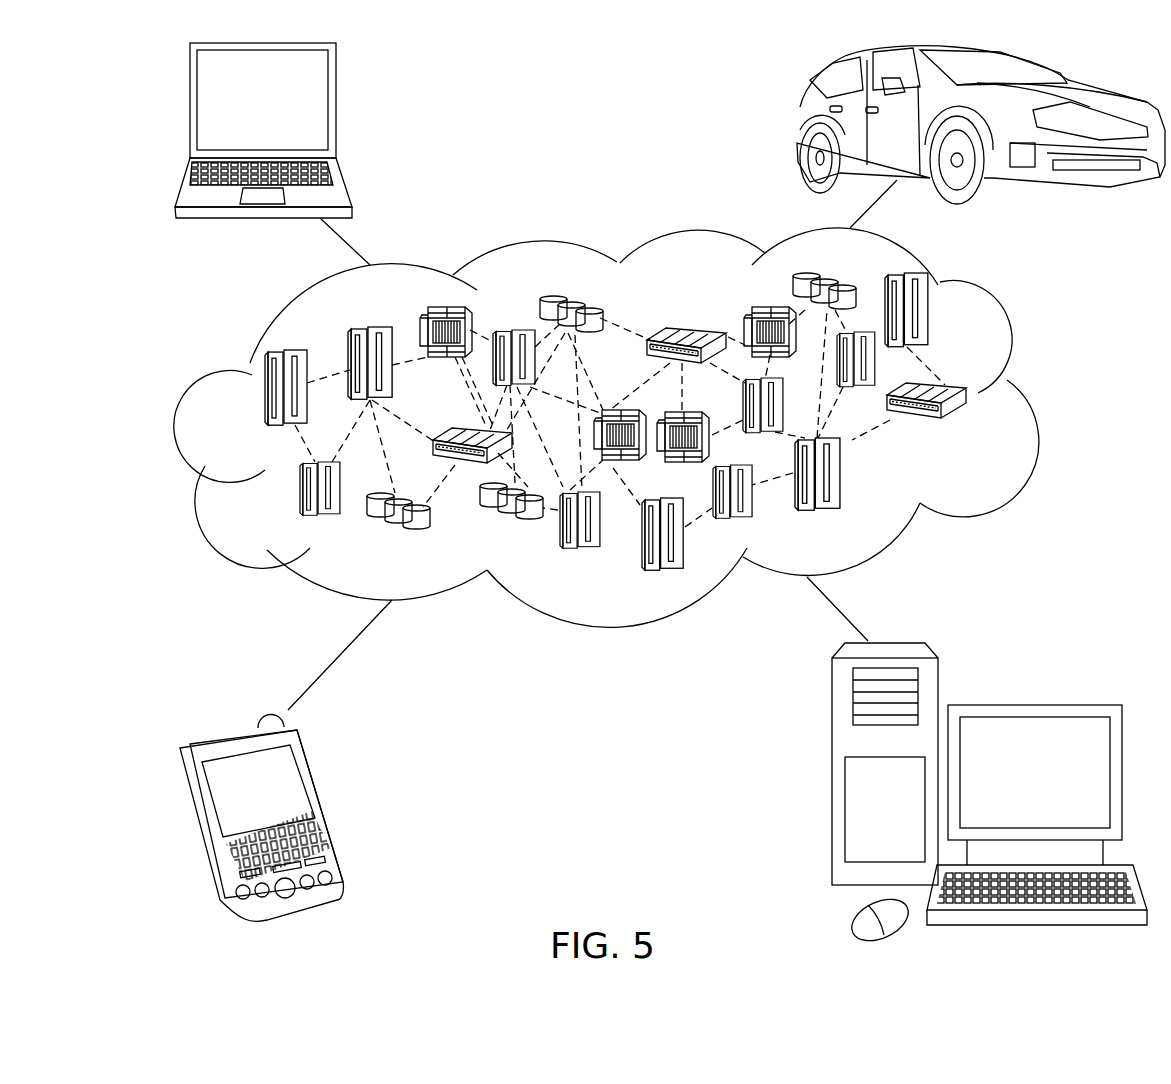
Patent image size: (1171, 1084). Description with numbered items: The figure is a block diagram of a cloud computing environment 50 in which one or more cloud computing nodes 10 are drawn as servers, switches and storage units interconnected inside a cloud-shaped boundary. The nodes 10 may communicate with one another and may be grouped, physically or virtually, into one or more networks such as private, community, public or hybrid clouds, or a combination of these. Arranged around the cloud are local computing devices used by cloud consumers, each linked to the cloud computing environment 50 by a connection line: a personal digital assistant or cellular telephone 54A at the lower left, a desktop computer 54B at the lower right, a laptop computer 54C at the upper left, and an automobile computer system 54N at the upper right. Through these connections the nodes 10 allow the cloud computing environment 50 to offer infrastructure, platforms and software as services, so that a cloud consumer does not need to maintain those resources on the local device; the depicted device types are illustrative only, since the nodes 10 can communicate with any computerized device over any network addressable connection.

The laptop computer 54C is at (336, 109).
The automobile computer system 54N is at (800, 122).
The personal digital assistant (PDA) or cellular telephone 54A is at (327, 806).
The desktop computer 54B is at (1033, 705).
The cloud computing environment 50 is at (1033, 397).
The cloud computing node 10 is at (968, 430).